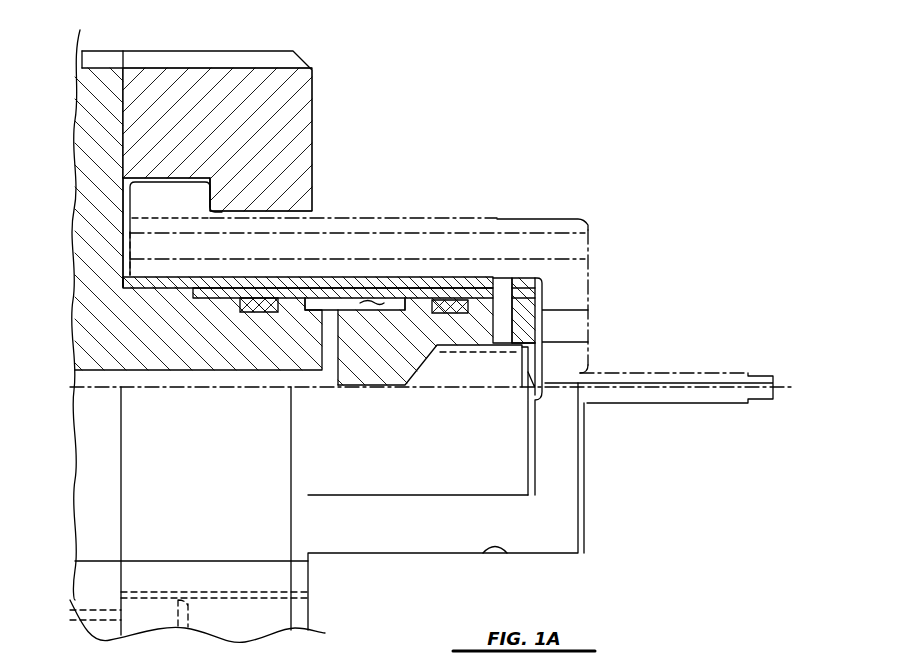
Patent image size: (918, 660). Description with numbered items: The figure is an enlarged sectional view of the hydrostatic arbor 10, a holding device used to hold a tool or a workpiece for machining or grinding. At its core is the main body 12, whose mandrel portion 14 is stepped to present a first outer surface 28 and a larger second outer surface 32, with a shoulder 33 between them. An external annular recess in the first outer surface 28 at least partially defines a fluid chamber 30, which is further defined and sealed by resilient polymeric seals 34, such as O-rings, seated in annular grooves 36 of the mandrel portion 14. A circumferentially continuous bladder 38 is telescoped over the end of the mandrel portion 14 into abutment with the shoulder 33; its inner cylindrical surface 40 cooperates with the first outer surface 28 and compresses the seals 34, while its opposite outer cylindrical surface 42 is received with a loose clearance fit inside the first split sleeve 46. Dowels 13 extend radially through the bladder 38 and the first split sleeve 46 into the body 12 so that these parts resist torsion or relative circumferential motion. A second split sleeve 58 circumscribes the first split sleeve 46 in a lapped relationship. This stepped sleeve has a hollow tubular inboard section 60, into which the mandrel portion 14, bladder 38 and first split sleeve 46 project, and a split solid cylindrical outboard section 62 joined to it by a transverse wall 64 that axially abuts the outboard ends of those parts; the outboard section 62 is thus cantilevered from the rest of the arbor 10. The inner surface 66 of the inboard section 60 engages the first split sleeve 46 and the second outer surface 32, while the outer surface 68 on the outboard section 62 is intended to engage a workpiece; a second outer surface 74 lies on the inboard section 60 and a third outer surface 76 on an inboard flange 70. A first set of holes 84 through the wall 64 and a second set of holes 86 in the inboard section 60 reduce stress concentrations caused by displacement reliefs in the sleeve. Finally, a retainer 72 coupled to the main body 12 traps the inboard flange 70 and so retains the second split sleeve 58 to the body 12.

The hydrostatic arbor 10 is at (700, 143).
The main body 12 is at (105, 174).
The dowels 13 is at (505, 314).
The mandrel portion 14 is at (180, 345).
The first outer surface 28 is at (455, 300).
The fluid chamber 30 is at (375, 300).
The second outer surface 32 is at (167, 277).
The shoulder 33 is at (177, 297).
The resilient polymeric seals 34 is at (267, 300).
The annular grooves 36 is at (250, 300).
The bladder 38 is at (348, 285).
The inner cylindrical surface 40 is at (413, 300).
The outer cylindrical surface 42 is at (403, 296).
The first split sleeve 46 is at (326, 274).
The second split sleeve 58 is at (567, 216).
The inboard section 60 is at (480, 278).
The outboard section 62 is at (680, 373).
The wall 64 is at (578, 282).
The inner surface 66 is at (480, 276).
The outer surface 68 is at (623, 368).
The inboard flange 70 is at (185, 188).
The retainer 72 is at (330, 95).
The second outer surface 74 is at (438, 300).
The third outer surface 76 is at (163, 182).
The first set of holes 84 is at (580, 317).
The second set of holes 86 is at (540, 215).